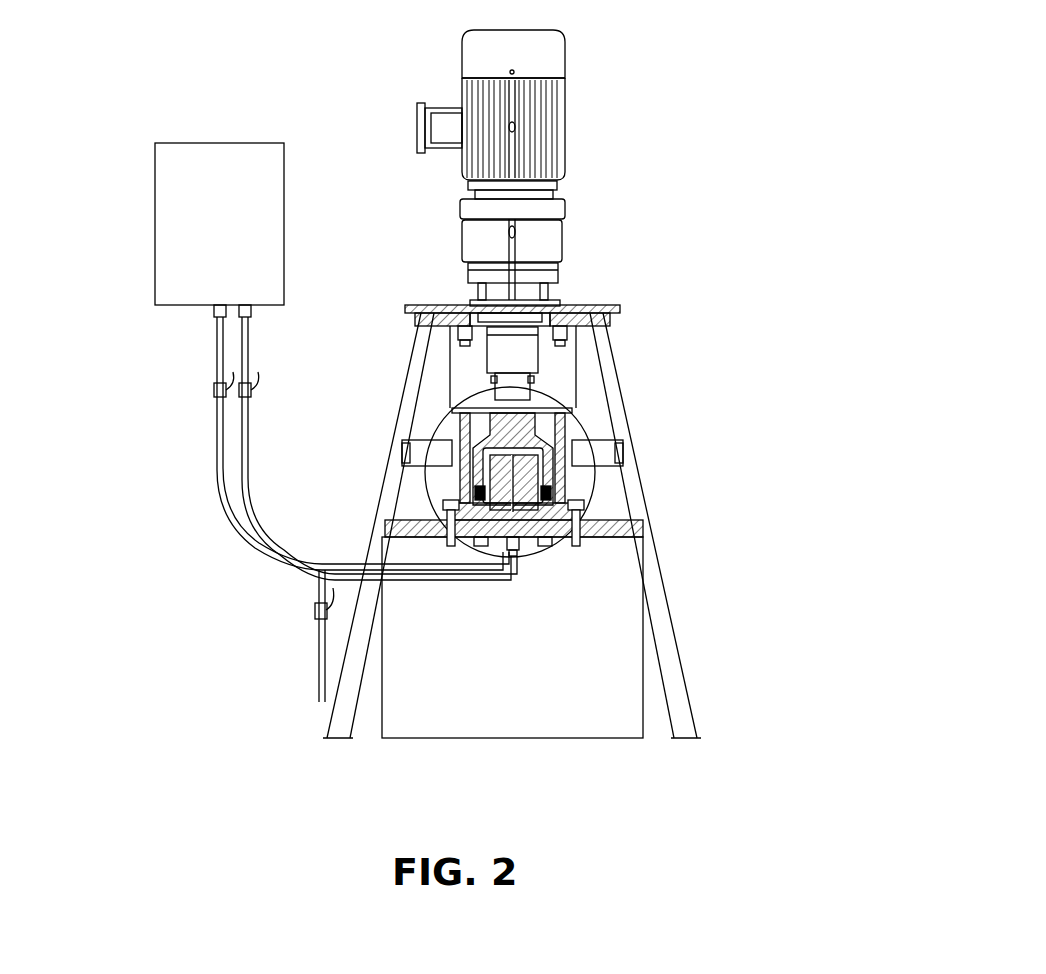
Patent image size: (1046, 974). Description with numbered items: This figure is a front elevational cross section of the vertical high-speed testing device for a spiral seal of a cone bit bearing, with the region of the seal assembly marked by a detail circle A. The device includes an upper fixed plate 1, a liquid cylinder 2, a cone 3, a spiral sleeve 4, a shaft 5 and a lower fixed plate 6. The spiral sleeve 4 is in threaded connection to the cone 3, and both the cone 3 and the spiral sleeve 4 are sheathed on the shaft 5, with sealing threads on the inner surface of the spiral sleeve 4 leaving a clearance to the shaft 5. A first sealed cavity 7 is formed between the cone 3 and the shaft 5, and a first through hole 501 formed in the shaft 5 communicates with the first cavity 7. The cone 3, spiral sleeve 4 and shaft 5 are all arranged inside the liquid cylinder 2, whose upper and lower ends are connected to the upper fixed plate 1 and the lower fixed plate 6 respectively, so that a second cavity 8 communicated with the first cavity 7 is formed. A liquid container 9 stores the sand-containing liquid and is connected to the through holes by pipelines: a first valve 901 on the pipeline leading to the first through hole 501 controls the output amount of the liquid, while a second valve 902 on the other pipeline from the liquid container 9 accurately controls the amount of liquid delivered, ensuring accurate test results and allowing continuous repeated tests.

The upper fixed plate 1 is at (550, 410).
The liquid cylinder 2 is at (560, 432).
The cone 3 is at (548, 460).
The spiral sleeve 4 is at (542, 495).
The shaft 5 is at (540, 505).
The first through hole 501 is at (517, 533).
The lower fixed plate 6 is at (528, 520).
The first sealed cavity 7 is at (497, 450).
The second cavity 8 is at (478, 428).
The liquid container 9 is at (182, 193).
The first valve 901 is at (358, 424).
The second valve 902 is at (218, 395).
The detail region A is at (597, 488).